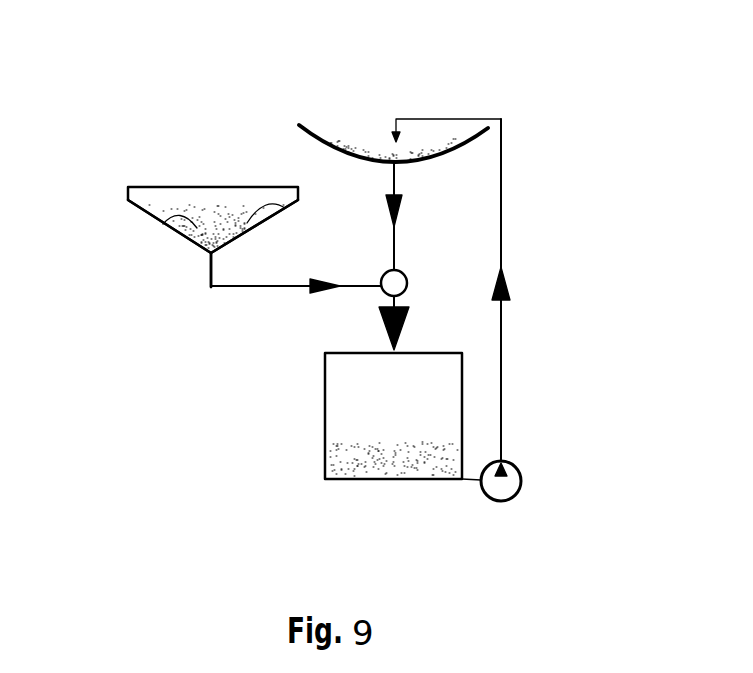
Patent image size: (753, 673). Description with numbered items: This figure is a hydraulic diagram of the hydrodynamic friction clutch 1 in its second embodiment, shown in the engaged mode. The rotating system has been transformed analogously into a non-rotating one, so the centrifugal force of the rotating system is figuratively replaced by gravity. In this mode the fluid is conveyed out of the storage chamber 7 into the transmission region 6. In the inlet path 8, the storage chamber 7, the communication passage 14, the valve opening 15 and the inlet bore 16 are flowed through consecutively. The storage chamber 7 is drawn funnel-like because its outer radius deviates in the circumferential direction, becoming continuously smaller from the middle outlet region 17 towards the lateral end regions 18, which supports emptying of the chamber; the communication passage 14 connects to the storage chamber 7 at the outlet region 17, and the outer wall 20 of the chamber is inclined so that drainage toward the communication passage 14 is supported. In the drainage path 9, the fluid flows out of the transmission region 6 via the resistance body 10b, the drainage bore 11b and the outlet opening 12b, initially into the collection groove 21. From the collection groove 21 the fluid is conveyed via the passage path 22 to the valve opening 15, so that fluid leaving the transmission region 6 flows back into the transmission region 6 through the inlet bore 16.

The hydrodynamic friction clutch 1 is at (659, 84).
The transmission region 6 is at (387, 455).
The storage chamber 7 is at (195, 198).
The inlet path 8 is at (263, 306).
The drainage path 9 is at (524, 200).
The resistance body 10b is at (521, 483).
The drainage bore 11b is at (503, 384).
The outlet opening 12b is at (395, 138).
The communication passage 14 is at (237, 289).
The valve opening 15 is at (386, 270).
The inlet bore 16 is at (382, 298).
The outlet region 17 is at (197, 256).
The end regions 18 is at (131, 212).
The outer wall 20 is at (183, 224).
The collection groove 21 is at (360, 150).
The passage path 22 is at (397, 178).